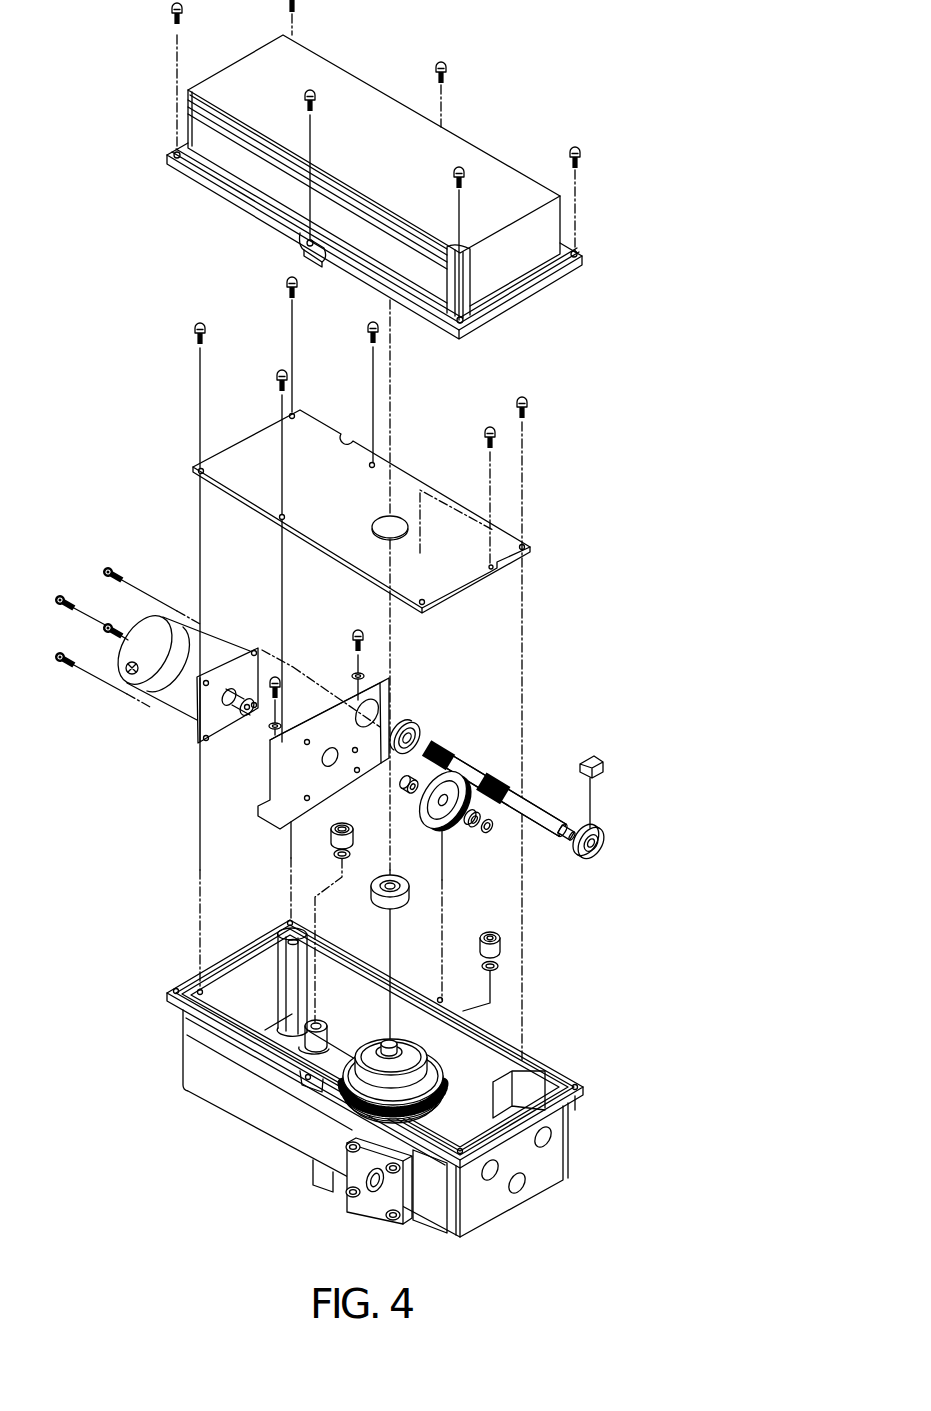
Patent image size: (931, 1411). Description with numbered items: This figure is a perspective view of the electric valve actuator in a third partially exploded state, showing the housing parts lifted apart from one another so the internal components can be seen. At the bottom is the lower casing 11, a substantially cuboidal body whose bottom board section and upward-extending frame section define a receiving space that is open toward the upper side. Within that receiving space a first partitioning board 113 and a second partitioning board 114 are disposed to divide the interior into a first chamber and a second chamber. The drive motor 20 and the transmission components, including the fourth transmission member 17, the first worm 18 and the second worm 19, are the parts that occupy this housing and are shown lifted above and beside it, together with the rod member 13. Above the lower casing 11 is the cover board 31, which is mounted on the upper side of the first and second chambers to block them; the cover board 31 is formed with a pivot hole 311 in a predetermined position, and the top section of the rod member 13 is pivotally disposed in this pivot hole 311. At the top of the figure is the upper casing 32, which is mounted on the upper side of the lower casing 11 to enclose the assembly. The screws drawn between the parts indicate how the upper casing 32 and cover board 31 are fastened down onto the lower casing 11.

The lower casing 11 is at (180, 1050).
The first partitioning board 113 is at (292, 780).
The second partitioning board 114 is at (512, 1095).
The rod member 13 is at (392, 1043).
The fourth transmission member 17 is at (440, 1073).
The first worm 18 is at (353, 1197).
The second worm 19 is at (540, 797).
The drive motor 20 is at (180, 692).
The cover board 31 is at (238, 430).
The pivot hole 311 is at (400, 517).
The upper casing 32 is at (358, 75).